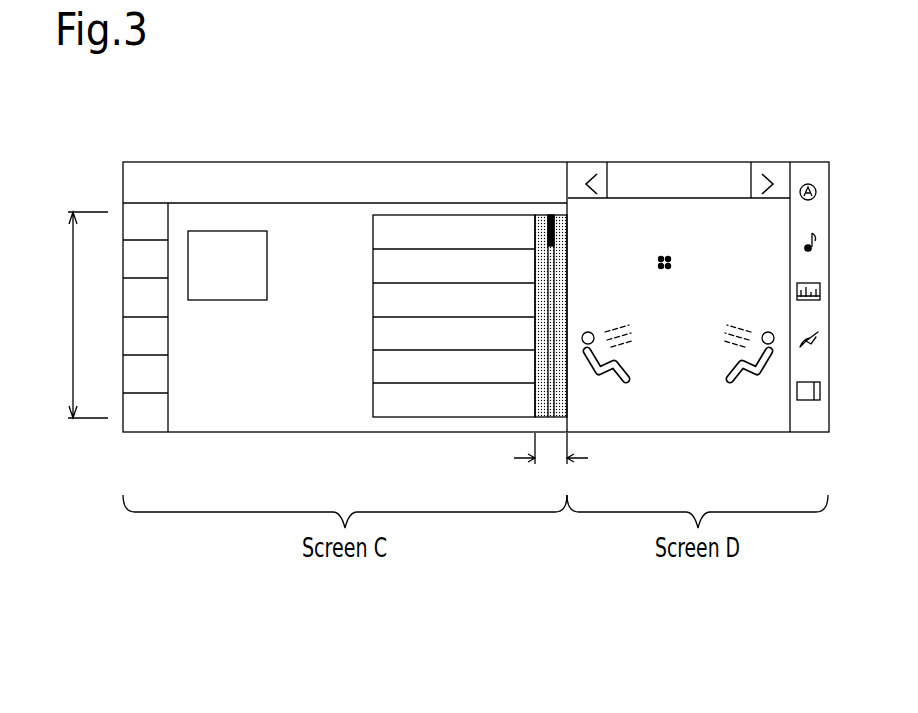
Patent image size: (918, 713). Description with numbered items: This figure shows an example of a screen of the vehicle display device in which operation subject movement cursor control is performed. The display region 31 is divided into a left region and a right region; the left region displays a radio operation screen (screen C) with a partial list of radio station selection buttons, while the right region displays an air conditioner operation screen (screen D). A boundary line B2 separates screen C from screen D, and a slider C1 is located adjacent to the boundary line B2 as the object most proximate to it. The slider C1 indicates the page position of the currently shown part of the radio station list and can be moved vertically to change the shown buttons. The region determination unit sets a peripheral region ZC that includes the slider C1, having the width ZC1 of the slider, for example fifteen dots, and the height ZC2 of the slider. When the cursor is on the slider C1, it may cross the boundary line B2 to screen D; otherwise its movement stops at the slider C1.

The display region 31 is at (477, 162).
The slider C1 is at (542, 220).
The boundary line B2 is at (566, 173).
The peripheral region ZC is at (535, 403).
The width of the slider ZC1 is at (551, 463).
The height of the slider ZC2 is at (65, 315).